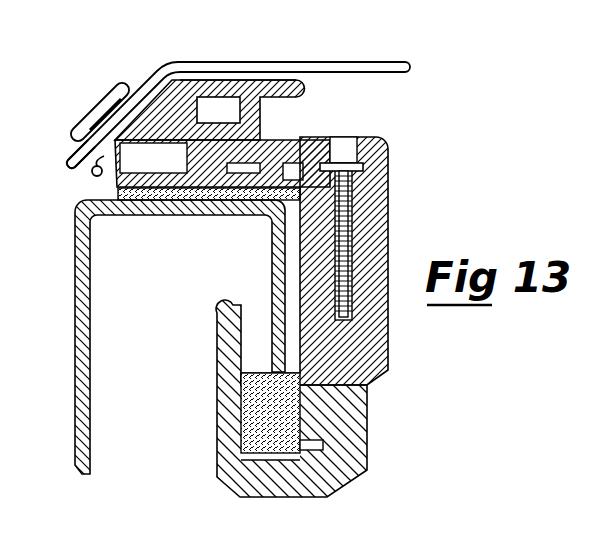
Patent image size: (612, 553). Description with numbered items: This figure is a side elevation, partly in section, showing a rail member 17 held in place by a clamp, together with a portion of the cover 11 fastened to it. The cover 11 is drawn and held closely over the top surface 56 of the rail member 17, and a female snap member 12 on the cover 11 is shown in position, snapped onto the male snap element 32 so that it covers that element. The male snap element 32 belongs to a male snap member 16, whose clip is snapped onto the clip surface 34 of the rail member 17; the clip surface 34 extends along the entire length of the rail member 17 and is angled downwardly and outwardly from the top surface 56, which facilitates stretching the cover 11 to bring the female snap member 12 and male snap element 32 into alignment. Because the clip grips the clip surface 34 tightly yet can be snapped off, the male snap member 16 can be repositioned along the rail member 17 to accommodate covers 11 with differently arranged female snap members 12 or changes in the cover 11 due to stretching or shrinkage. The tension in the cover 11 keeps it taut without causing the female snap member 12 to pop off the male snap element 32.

The cover 11 is at (172, 60).
The female snap member 12 is at (88, 111).
The male snap member 16 is at (82, 189).
The rail member 17 is at (250, 97).
The male snap element 32 is at (104, 103).
The clip surface 34 is at (70, 155).
The top surface 56 is at (218, 79).